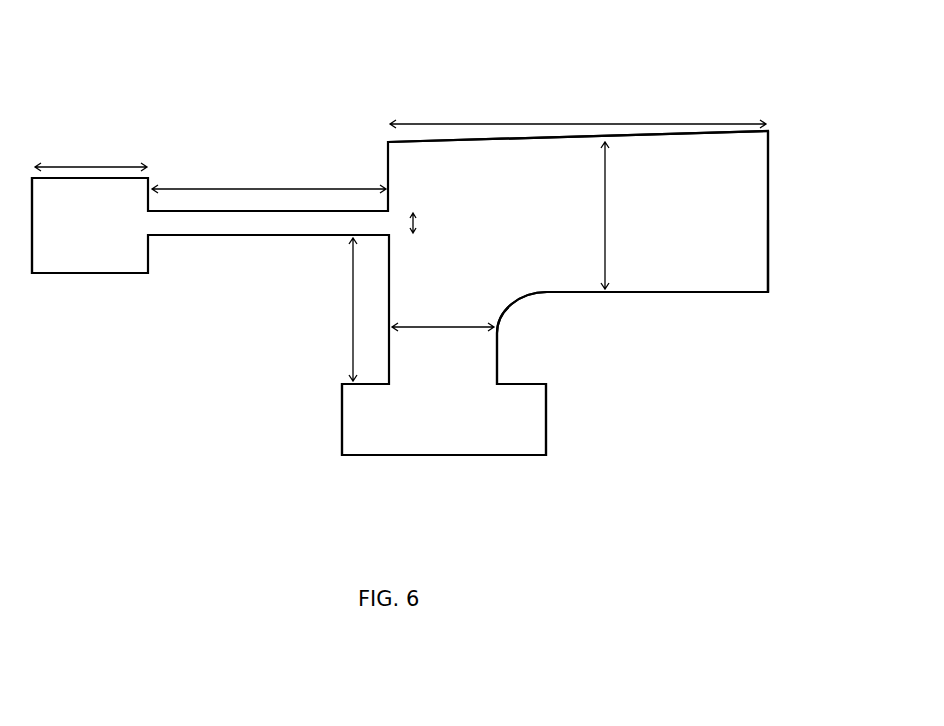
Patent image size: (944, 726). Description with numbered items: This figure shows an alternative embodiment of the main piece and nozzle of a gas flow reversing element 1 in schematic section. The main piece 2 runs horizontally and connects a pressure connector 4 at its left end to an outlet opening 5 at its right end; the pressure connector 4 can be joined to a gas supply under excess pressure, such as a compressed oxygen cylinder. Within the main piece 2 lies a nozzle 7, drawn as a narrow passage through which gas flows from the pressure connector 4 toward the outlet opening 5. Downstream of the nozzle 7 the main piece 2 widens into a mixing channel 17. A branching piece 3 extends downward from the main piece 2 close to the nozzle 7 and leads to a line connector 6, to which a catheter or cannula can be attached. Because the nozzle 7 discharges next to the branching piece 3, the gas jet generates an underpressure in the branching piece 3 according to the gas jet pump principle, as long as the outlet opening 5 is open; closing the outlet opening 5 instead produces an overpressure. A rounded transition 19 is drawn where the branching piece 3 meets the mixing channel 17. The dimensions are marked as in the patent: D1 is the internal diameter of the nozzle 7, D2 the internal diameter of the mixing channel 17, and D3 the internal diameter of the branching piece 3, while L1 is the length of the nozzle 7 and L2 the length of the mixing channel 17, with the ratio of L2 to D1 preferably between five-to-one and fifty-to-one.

The gas flow reversing element 1 is at (432, 99).
The main piece 2 is at (576, 134).
The branching piece 3 is at (497, 362).
The pressure connector 4 is at (33, 222).
The outlet opening 5 is at (768, 262).
The line connector 6 is at (408, 458).
The nozzle 7 is at (387, 224).
The mixing channel 17 is at (720, 225).
The rounded transition 19 is at (522, 296).
The length of the nozzle L1 is at (284, 190).
The length of the mixing channel L2 is at (530, 122).
The internal diameter of the nozzle D1 is at (419, 214).
The internal diameter of the mixing channel D2 is at (605, 228).
The internal diameter of the branching piece D3 is at (455, 322).